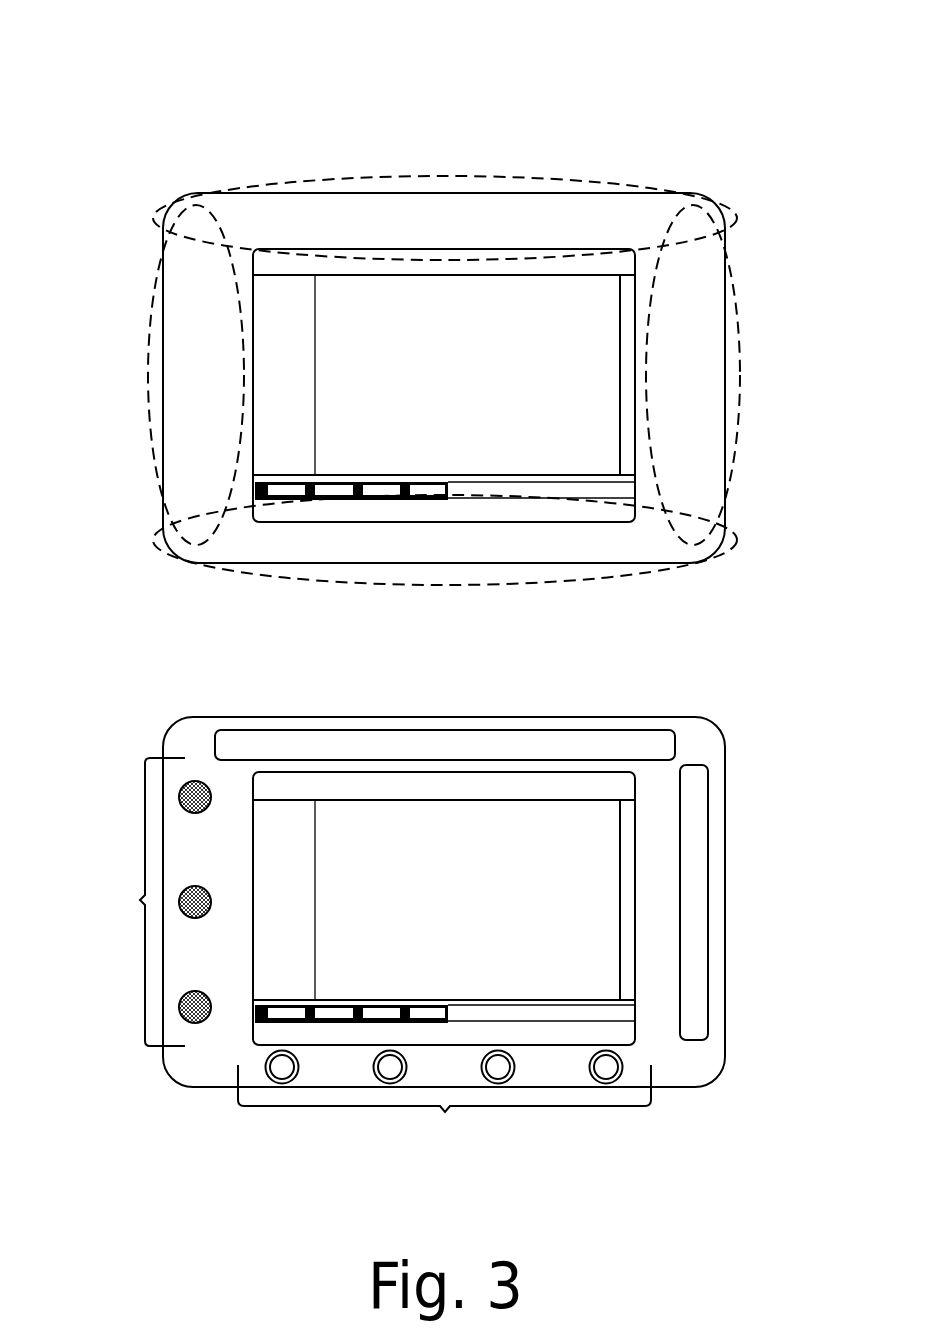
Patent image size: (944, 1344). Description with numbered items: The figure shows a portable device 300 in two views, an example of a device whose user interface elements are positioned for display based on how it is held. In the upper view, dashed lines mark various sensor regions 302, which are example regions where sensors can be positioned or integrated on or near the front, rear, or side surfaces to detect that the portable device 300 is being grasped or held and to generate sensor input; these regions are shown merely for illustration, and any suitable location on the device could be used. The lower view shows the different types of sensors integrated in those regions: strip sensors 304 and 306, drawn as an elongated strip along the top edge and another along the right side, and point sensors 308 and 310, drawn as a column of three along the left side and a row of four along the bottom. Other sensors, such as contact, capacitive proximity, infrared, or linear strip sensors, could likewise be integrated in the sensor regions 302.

The portable device 300 is at (725, 90).
The sensor regions 302 is at (523, 213).
The strip sensor 304 is at (548, 742).
The strip sensor 306 is at (693, 830).
The point sensors 308 is at (144, 845).
The point sensors 310 is at (517, 1106).